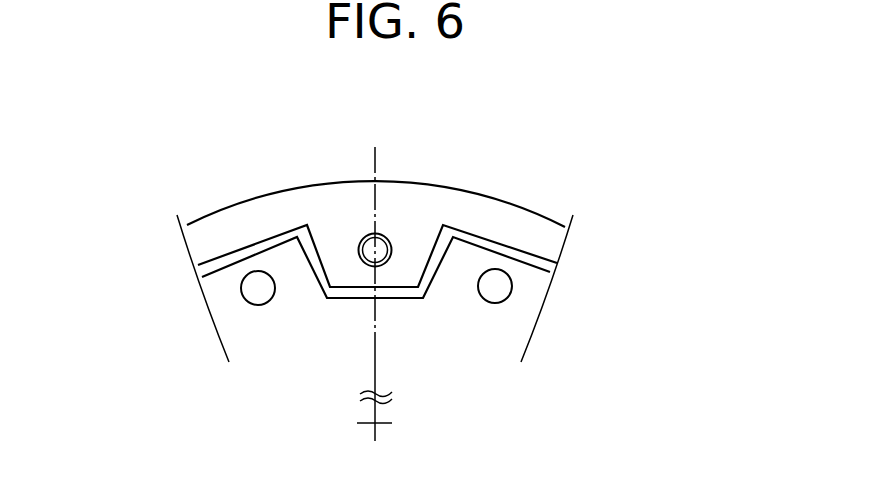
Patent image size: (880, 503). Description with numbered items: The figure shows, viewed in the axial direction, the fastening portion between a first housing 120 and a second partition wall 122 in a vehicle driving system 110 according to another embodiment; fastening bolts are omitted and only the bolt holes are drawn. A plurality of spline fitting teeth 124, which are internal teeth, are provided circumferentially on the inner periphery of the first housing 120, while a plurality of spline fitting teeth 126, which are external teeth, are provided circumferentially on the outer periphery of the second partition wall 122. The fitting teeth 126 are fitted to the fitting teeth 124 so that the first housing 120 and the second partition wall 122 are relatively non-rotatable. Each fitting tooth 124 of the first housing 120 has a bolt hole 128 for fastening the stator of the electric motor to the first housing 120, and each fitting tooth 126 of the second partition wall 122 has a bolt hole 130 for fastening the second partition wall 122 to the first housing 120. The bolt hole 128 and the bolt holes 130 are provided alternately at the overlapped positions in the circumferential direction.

The vehicle driving system 110 is at (544, 144).
The first housing 120 is at (342, 197).
The second partition wall 122 is at (420, 240).
The spline fitting teeth 124 is at (343, 255).
The spline fitting teeth 126 is at (223, 298).
The bolt hole 128 is at (378, 240).
The bolt hole 130 is at (267, 300).